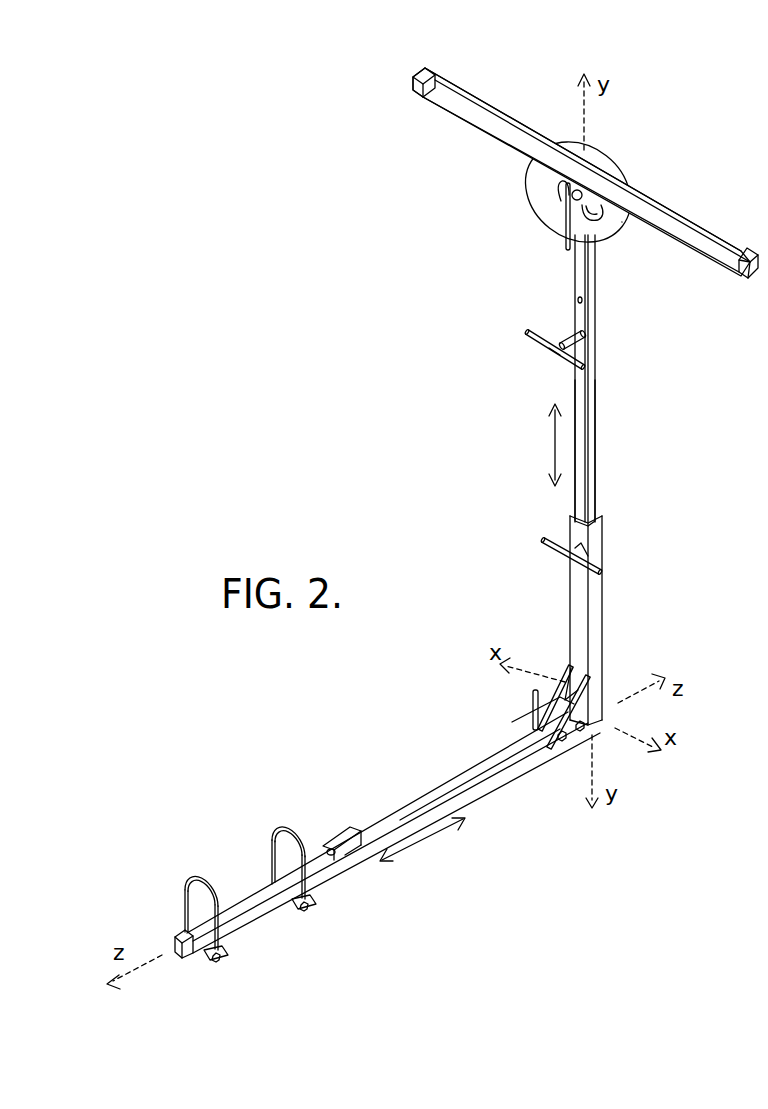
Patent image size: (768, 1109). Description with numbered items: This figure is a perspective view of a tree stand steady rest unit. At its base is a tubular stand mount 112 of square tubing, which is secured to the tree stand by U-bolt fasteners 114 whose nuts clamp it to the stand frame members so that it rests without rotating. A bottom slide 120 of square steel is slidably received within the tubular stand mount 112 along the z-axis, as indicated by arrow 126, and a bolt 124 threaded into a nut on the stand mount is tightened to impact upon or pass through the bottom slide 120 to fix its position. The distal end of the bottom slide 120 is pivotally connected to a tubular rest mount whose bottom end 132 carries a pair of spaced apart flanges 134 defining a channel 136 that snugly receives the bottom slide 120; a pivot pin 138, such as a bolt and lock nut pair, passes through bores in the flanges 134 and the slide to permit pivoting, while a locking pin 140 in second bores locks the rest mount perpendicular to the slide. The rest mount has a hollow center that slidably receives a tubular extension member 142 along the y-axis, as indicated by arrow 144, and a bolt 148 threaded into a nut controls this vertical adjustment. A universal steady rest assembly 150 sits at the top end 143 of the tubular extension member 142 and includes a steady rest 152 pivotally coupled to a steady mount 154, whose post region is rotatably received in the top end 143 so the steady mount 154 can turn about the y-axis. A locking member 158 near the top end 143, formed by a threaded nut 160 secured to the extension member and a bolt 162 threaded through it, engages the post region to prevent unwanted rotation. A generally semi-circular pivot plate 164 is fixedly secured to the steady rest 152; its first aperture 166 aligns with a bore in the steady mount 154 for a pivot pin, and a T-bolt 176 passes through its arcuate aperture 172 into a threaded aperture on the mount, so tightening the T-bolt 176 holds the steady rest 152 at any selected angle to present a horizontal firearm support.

The tubular stand mount 112 is at (247, 927).
The U-bolt fasteners 114 is at (197, 873).
The bottom slide 120 is at (495, 782).
The bolt 124 is at (352, 828).
The arrow 126 is at (424, 845).
The bottom end 132 is at (623, 742).
The flanges 134 is at (604, 702).
The channel 136 is at (567, 670).
The pivot pin 138 is at (577, 738).
The locking pin 140 is at (555, 690).
The tubular extension member 142 is at (598, 418).
The top end 143 is at (597, 320).
The arrow 144 is at (553, 450).
The bolt 148 is at (548, 544).
The universal steady rest assembly 150 is at (600, 258).
The steady rest 152 is at (490, 127).
The steady mount 154 is at (573, 279).
The locking member 158 is at (530, 333).
The threaded nut 160 is at (594, 336).
The bolt 162 is at (563, 352).
The pivot plate 164 is at (538, 203).
The first aperture 166 is at (582, 192).
The arcuate aperture 172 is at (601, 205).
The T-bolt 176 is at (566, 242).